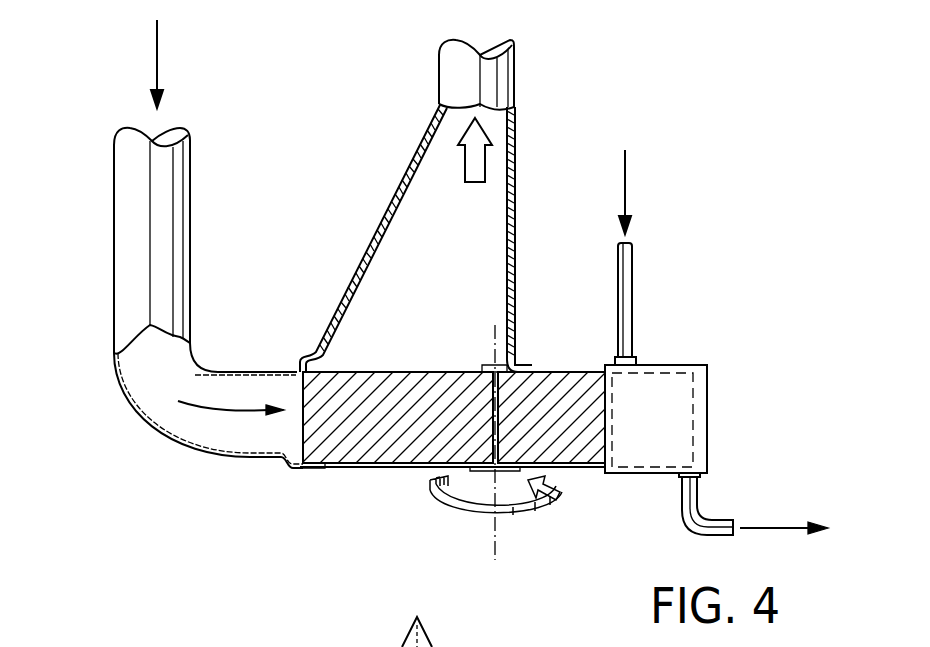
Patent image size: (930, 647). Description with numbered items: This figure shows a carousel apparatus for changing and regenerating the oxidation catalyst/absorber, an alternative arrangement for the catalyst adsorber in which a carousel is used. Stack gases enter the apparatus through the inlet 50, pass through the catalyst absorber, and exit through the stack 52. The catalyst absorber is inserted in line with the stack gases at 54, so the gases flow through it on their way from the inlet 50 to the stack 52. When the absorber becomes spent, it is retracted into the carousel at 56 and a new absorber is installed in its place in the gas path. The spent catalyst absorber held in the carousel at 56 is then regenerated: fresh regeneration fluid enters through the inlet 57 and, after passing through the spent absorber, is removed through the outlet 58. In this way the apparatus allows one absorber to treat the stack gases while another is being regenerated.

The inlet 50 is at (113, 195).
The stack 52 is at (515, 88).
The catalyst absorber 54 is at (390, 435).
The carousel 56 is at (558, 402).
The inlet 57 is at (633, 287).
The outlet 58 is at (697, 502).